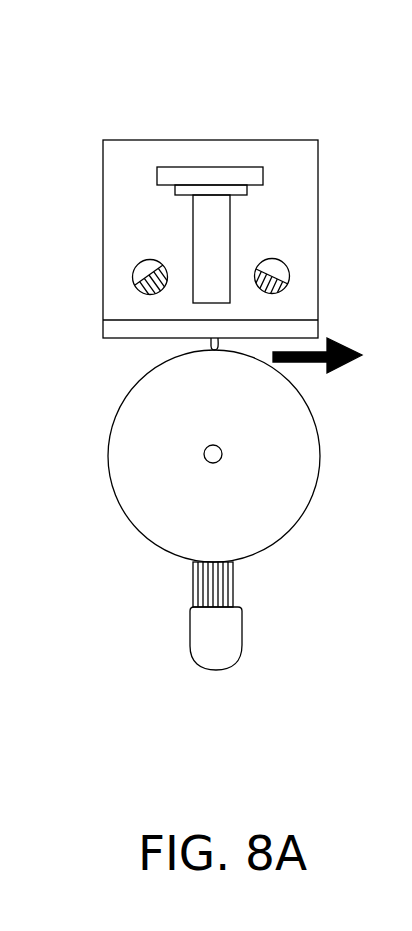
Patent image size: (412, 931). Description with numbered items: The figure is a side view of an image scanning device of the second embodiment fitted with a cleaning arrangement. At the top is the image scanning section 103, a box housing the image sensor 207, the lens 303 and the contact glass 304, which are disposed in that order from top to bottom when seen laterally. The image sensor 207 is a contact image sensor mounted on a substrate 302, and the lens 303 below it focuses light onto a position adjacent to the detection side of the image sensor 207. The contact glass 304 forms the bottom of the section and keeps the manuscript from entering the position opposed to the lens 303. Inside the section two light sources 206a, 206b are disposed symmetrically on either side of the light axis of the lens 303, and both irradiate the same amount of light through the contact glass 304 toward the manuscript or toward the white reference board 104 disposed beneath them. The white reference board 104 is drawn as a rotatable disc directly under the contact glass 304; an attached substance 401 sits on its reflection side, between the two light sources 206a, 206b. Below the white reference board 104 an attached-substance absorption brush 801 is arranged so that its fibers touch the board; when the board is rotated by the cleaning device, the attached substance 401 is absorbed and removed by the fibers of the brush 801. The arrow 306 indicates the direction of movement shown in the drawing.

The image scanning section 103 is at (148, 127).
The substrate 302 is at (203, 173).
The image sensor 207 is at (245, 188).
The lens 303 is at (217, 230).
The light source 206b is at (137, 275).
The light source 206a is at (283, 275).
The contact glass 304 is at (303, 330).
The attached substance 401 is at (214, 349).
The movement direction arrow 306 is at (303, 363).
The white reference board 104 is at (285, 524).
The attached-substance absorption brush 801 is at (233, 630).